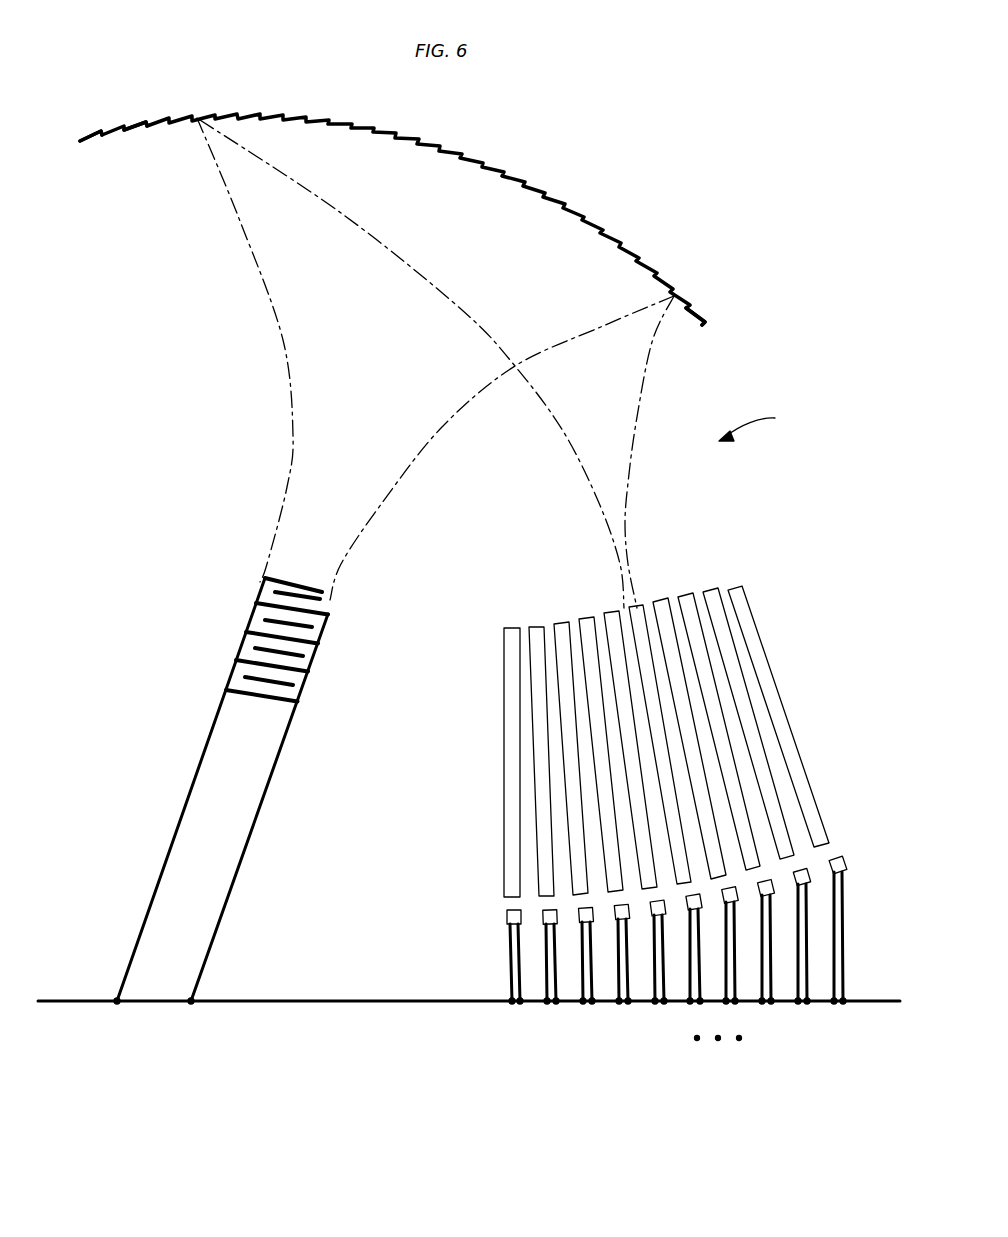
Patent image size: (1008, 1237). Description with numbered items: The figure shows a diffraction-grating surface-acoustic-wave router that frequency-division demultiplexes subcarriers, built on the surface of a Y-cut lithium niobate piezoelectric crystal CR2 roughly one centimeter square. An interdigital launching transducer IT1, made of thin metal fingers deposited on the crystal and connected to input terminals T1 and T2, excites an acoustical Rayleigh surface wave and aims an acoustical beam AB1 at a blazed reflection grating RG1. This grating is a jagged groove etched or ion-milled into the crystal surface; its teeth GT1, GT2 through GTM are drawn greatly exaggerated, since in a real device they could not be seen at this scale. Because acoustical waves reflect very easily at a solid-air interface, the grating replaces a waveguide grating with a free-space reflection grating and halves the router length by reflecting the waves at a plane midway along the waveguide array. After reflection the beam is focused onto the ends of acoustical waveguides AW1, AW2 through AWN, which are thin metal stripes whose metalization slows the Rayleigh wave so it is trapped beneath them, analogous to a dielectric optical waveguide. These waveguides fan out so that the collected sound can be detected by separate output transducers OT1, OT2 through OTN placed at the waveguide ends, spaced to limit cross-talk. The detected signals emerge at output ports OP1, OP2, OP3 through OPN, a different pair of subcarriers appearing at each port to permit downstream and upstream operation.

The blazed reflection grating RG1 is at (557, 197).
The grating tooth GT1 is at (96, 132).
The grating tooth GT2 is at (143, 125).
The grating tooth GTM is at (700, 320).
The acoustical beam AB1 is at (302, 468).
The piezoelectric crystal CR2 is at (769, 426).
The interdigital launching transducer IT1 is at (254, 614).
The input terminal T1 is at (118, 1006).
The input terminal T2 is at (192, 1006).
The acoustical waveguide AW1 is at (505, 684).
The acoustical waveguide AW2 is at (537, 741).
The acoustical waveguide AWN is at (780, 693).
The output transducer OT1 is at (506, 922).
The output transducer OT2 is at (546, 925).
The output transducer OTN is at (836, 858).
The output port OP1 is at (514, 1008).
The output port OP2 is at (550, 1008).
The output port OP3 is at (587, 1008).
The output port OPN is at (838, 1008).